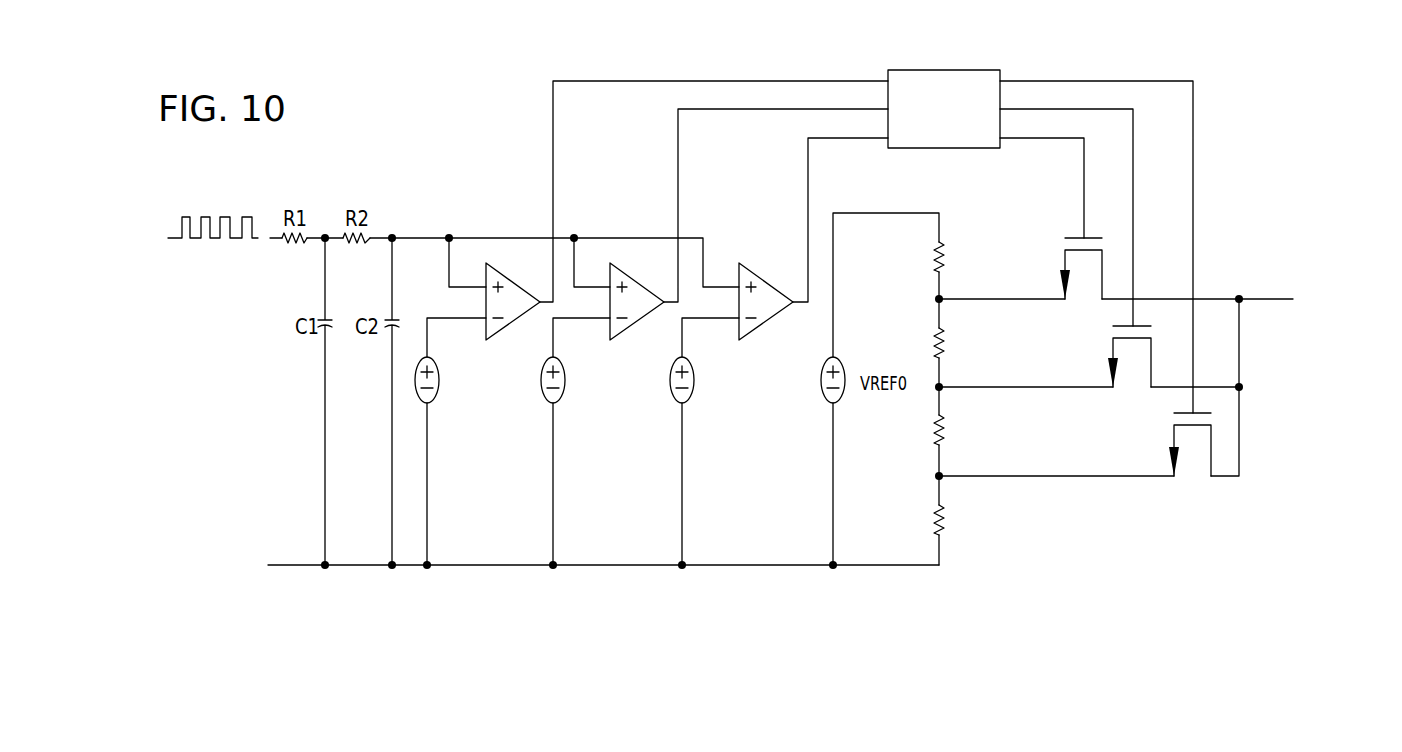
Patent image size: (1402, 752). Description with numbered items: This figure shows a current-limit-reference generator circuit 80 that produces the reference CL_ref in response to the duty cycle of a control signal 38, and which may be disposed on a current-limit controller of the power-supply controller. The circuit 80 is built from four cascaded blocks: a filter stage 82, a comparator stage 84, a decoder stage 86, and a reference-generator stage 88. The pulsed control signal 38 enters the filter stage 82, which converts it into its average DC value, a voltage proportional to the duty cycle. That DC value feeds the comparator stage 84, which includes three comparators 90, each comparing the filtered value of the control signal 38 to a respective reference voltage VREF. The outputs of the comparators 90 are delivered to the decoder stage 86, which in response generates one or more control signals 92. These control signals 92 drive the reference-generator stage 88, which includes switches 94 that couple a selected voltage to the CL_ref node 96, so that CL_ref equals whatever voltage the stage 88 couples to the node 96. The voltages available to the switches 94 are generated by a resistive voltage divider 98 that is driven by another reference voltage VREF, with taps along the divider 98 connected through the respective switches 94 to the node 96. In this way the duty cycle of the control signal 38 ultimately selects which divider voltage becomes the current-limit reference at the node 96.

The control signal 38 is at (185, 213).
The circuit 80 is at (381, 610).
The filter stage 82 is at (339, 205).
The comparator stage 84 is at (596, 202).
The decoder stage 86 is at (973, 70).
The reference-generator stage 88 is at (1040, 517).
The comparators 90 is at (512, 322).
The control signals 92 is at (1193, 81).
The switches 94 is at (1065, 260).
The CL_ref node 96 is at (1239, 299).
The resistive voltage divider 98 is at (923, 278).